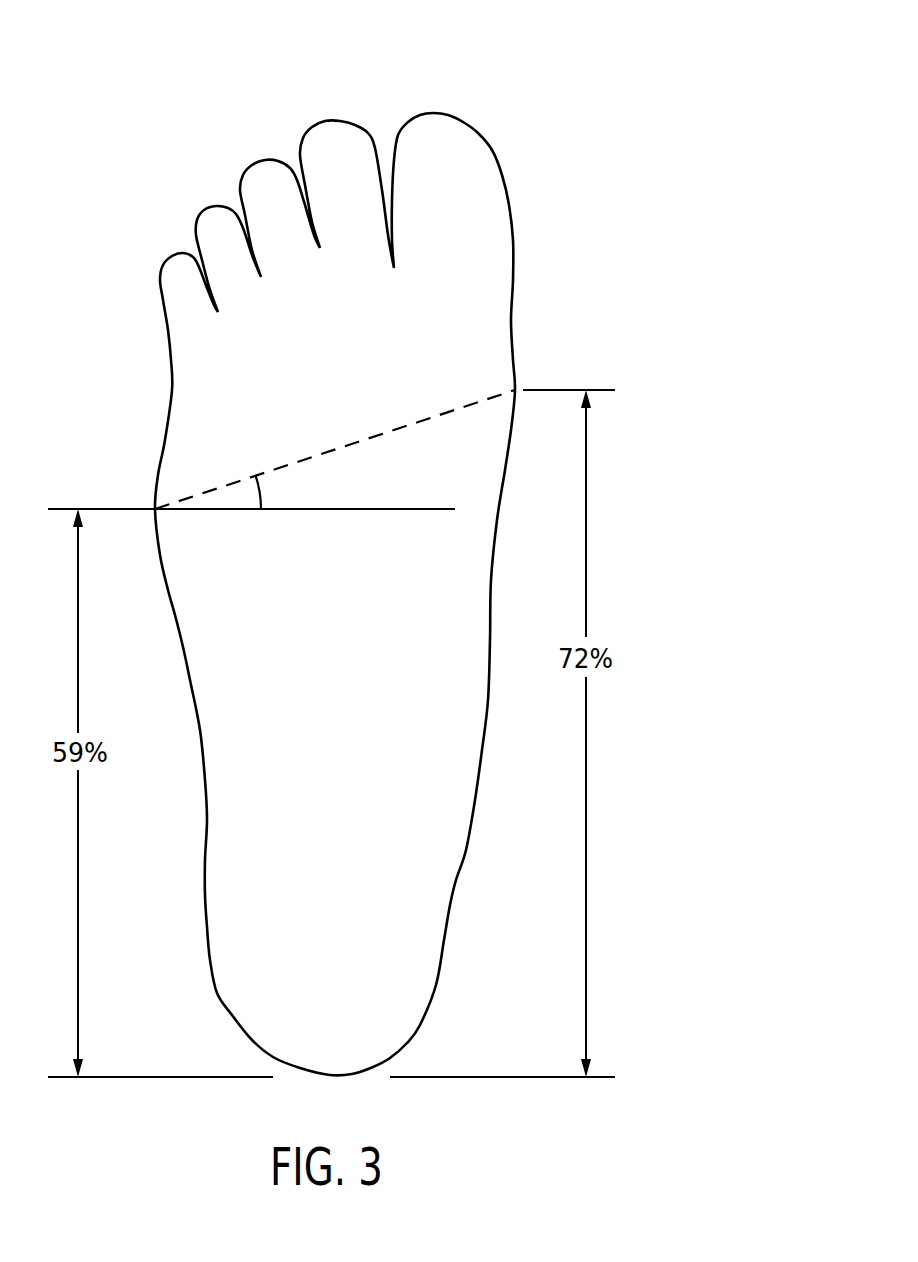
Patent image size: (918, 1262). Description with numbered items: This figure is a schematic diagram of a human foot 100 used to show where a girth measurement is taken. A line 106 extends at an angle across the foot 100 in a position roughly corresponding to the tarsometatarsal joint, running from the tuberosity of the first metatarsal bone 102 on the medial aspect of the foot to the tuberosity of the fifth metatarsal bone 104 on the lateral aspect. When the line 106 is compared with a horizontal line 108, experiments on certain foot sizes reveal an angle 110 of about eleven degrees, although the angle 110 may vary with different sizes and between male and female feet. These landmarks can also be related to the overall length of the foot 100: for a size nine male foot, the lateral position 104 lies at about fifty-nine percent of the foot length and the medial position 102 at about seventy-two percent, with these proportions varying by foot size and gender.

The foot 100 is at (508, 88).
The tuberosity of the first metatarsal bone 102 is at (515, 390).
The tuberosity of the fifth metatarsal bone 104 is at (155, 509).
The line 106 is at (372, 438).
The horizontal line 108 is at (315, 512).
The angle 110 is at (263, 493).